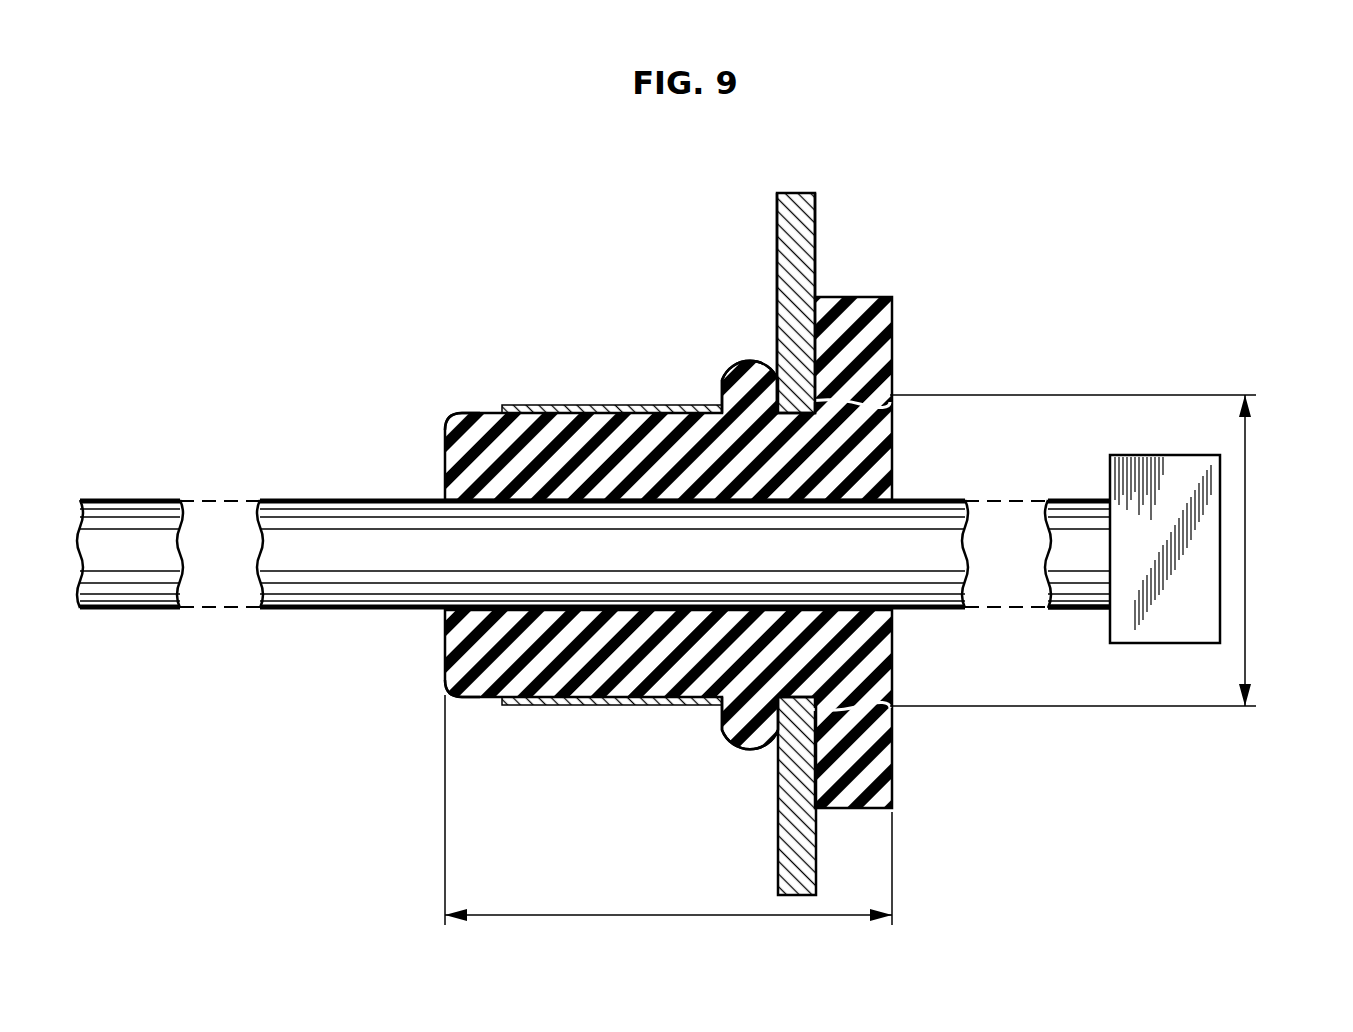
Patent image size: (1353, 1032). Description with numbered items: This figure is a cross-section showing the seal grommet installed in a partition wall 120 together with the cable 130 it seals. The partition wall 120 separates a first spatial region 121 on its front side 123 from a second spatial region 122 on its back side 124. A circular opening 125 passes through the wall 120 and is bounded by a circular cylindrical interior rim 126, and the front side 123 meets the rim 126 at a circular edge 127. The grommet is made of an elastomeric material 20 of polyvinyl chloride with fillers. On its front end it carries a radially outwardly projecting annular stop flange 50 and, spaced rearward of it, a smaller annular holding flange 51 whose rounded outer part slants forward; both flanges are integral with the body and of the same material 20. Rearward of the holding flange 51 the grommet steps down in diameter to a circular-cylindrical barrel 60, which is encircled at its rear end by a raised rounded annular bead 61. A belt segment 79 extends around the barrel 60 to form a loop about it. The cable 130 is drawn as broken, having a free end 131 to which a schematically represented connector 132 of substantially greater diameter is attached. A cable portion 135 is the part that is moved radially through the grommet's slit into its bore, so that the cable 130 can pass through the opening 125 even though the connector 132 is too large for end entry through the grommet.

The elastomeric material 20 is at (522, 432).
The stop flange 50 is at (892, 300).
The holding flange 51 is at (750, 352).
The barrel 60 is at (445, 655).
The bead 61 is at (456, 412).
The belt segment 79 is at (587, 405).
The partition wall 120 is at (796, 193).
The first spatial region 121 is at (983, 352).
The second spatial region 122 is at (370, 366).
The front side 123 is at (815, 233).
The back side 124 is at (777, 233).
The circular opening 125 is at (1248, 546).
The interior rim 126 is at (736, 390).
The circular edge 127 is at (868, 406).
The cable 130 is at (124, 500).
The free end 131 is at (1076, 608).
The connector 132 is at (1158, 455).
The cable portion 135 is at (619, 915).